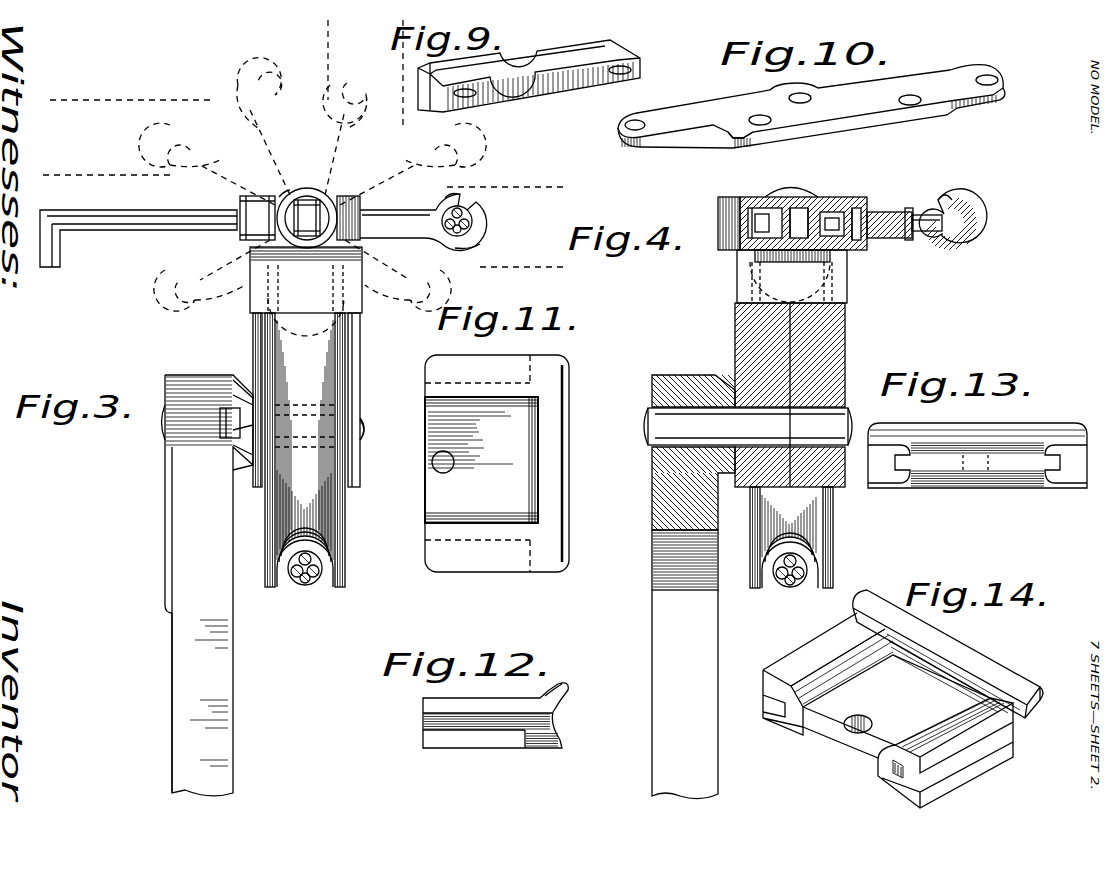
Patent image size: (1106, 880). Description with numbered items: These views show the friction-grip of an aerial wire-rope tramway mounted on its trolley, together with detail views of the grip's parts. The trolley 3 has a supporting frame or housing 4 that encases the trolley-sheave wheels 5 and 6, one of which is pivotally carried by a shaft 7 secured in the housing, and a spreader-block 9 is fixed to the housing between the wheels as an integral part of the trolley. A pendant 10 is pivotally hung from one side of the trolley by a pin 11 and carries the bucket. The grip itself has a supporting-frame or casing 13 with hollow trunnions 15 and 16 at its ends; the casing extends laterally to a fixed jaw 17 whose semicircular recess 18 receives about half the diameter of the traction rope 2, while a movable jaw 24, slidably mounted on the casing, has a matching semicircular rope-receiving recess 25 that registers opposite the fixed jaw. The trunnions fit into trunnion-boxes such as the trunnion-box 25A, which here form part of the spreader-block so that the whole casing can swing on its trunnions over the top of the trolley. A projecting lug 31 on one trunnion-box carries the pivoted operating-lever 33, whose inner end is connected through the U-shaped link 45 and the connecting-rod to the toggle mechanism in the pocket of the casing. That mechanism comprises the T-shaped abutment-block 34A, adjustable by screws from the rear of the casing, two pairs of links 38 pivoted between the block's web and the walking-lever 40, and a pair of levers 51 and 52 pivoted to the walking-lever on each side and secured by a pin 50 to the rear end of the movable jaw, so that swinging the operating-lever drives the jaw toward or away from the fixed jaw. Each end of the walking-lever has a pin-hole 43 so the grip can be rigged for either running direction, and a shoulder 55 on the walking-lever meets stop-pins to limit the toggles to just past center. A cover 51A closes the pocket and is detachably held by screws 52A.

In FIG. 3, the traction rope 2 is at (452, 206).
In FIG. 3, the trolley 3 is at (293, 290).
In FIG. 4, the trolley 3 is at (778, 278).
In FIG. 3, the supporting frame or housing 4 is at (362, 342).
In FIG. 4, the supporting frame or housing 4 is at (848, 318).
In FIG. 3, the trolley-sheave wheel 5 is at (305, 450).
In FIG. 4, the trolley-sheave wheel 6 is at (836, 519).
In FIG. 3, the shaft 7 is at (220, 420).
In FIG. 3, the spreader-block 9 is at (352, 488).
In FIG. 4, the spreader-block 9 is at (736, 338).
In FIG. 3, the pendant 10 is at (195, 527).
In FIG. 4, the pendant 10 is at (693, 587).
In FIG. 4, the pin 11 is at (748, 426).
In FIG. 3, the supporting-frame or casing 13 is at (400, 226).
In FIG. 4, the supporting-frame or casing 13 is at (864, 246).
In FIG. 4, the trunnion 15 is at (808, 205).
In FIG. 3, the trunnion 16 is at (307, 196).
In FIG. 3, the fixed jaw 17 is at (482, 221).
In FIG. 4, the fixed jaw 17 is at (977, 226).
In FIG. 3, the semicircular recess 18 is at (475, 246).
In FIG. 4, the semicircular recess 18 is at (932, 246).
In FIG. 4, the movable jaw 24 is at (918, 216).
In FIG. 11, the movable jaw 24 is at (497, 463).
In FIG. 12, the movable jaw 24 is at (423, 705).
In FIG. 13, the movable jaw 24 is at (1015, 462).
In FIG. 14, the movable jaw 24 is at (901, 699).
In FIG. 3, the semicircular rope-receiving recess 25 is at (447, 203).
In FIG. 4, the semicircular rope-receiving recess 25 is at (946, 202).
In FIG. 12, the semicircular rope-receiving recess 25 is at (568, 700).
In FIG. 14, the semicircular rope-receiving recess 25 is at (1040, 702).
In FIG. 3, the trunnion-box 25A is at (288, 197).
In FIG. 4, the trunnion-box 25A is at (789, 186).
In FIG. 3, the projecting lug 31 is at (240, 200).
In FIG. 3, the operating-lever 33 is at (133, 216).
In FIG. 4, the abutment-block 34A is at (722, 218).
In FIG. 9, the abutment-block 34A is at (558, 85).
In FIG. 4, the links 38 is at (752, 207).
In FIG. 4, the walking-lever 40 is at (825, 212).
In FIG. 10, the walking-lever 40 is at (811, 106).
In FIG. 10, the pin-hole 43 is at (636, 122).
In FIG. 3, the link 45 is at (307, 238).
In FIG. 4, the pin 50 is at (912, 239).
In FIG. 4, the lever 51 is at (856, 208).
In FIG. 3, the cover 51A is at (350, 200).
In FIG. 4, the cover 51A is at (790, 205).
In FIG. 4, the lever 52 is at (802, 262).
In FIG. 4, the screws 52A is at (740, 240).
In FIG. 10, the shoulder 55 is at (730, 140).